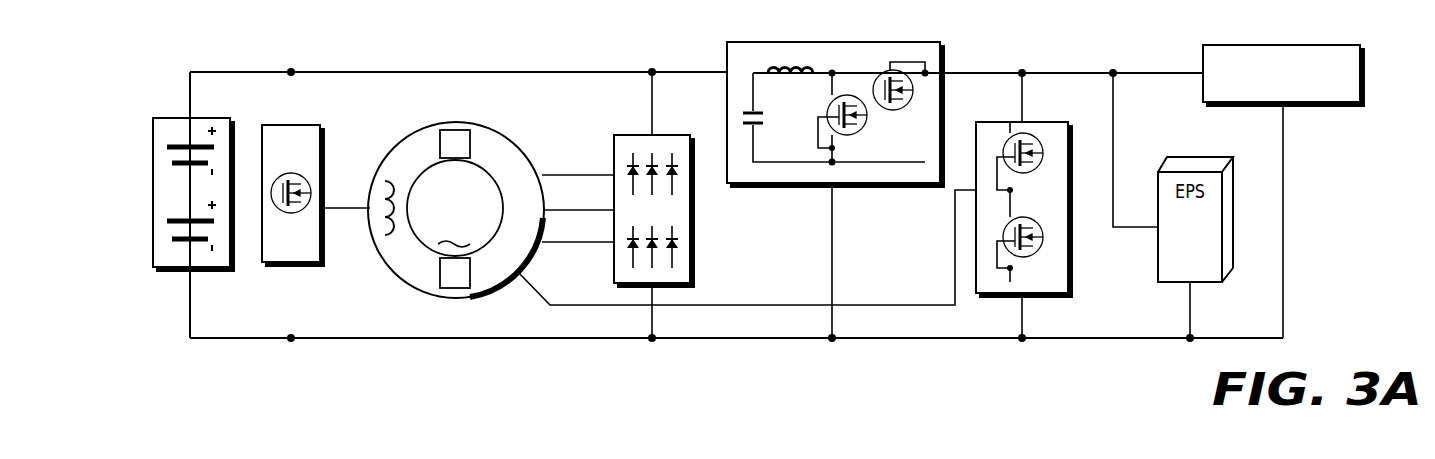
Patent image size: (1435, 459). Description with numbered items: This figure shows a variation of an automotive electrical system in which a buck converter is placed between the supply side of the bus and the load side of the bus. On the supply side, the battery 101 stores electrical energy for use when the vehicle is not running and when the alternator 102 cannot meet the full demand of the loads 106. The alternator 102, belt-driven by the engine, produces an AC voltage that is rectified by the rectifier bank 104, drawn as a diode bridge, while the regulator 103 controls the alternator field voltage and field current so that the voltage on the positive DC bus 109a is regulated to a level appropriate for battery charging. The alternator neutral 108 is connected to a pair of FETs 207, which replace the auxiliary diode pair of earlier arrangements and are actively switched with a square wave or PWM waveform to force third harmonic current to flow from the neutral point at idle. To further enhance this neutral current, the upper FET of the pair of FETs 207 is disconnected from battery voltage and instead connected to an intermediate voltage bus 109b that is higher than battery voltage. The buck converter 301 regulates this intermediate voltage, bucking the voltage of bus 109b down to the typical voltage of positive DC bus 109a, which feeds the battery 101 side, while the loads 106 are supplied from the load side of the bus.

The battery 101 is at (153, 210).
The alternator 102 is at (470, 122).
The regulator 103 is at (303, 263).
The rectifier bank 104 is at (630, 134).
The loads 106 is at (1225, 44).
The alternator neutral 108 is at (576, 305).
The positive DC bus 109a is at (540, 72).
The bus 109b is at (977, 71).
The pair of FETs 207 is at (1083, 108).
The buck converter 301 is at (776, 186).